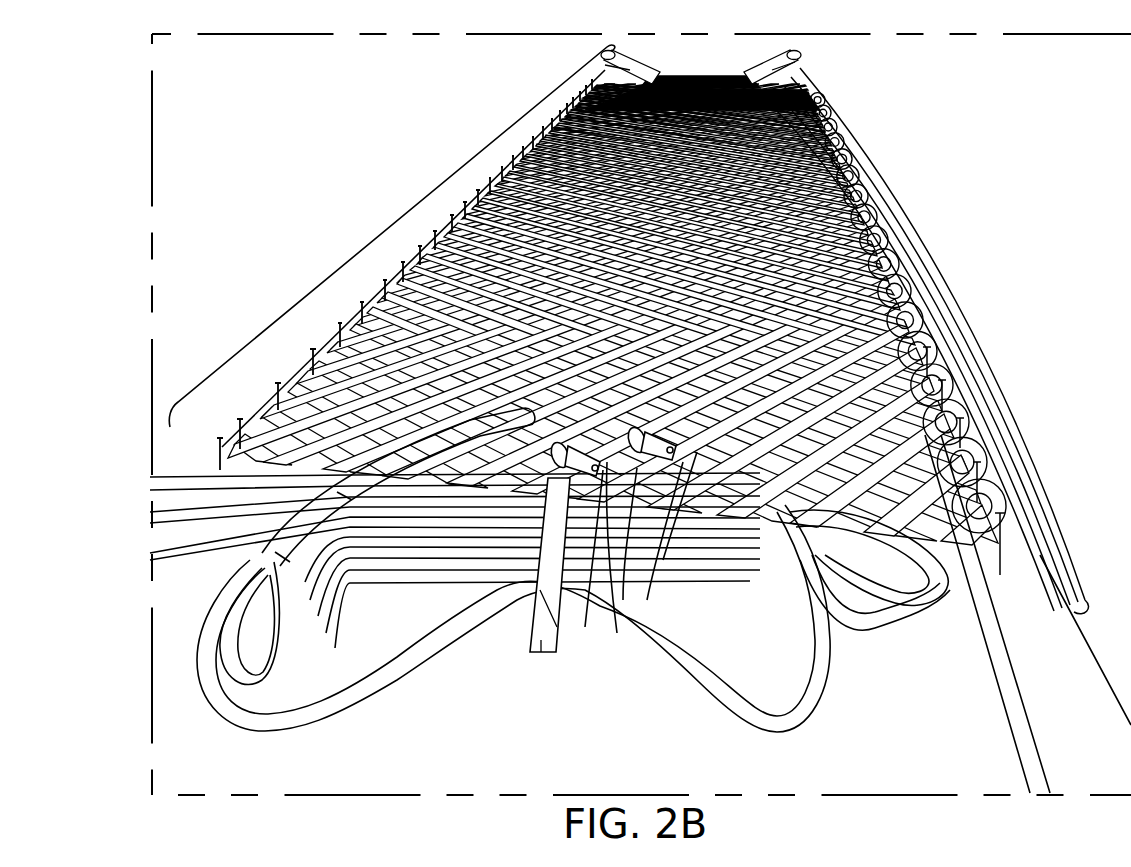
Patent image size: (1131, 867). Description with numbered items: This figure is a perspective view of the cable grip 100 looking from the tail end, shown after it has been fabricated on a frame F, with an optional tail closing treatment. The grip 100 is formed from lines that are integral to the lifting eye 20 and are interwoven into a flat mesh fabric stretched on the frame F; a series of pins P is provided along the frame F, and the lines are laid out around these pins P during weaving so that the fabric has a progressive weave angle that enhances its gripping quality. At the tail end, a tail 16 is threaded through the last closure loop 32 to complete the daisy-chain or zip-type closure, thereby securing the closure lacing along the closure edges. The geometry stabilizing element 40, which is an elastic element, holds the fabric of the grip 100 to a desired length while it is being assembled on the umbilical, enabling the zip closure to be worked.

The cable grip 100 is at (386, 231).
The lifting eye 20 is at (792, 54).
The closure loop 32 is at (896, 202).
The pin P is at (973, 438).
The frame F is at (1015, 647).
The tail 16 is at (670, 470).
The geometry stabilizing element 40 is at (545, 654).